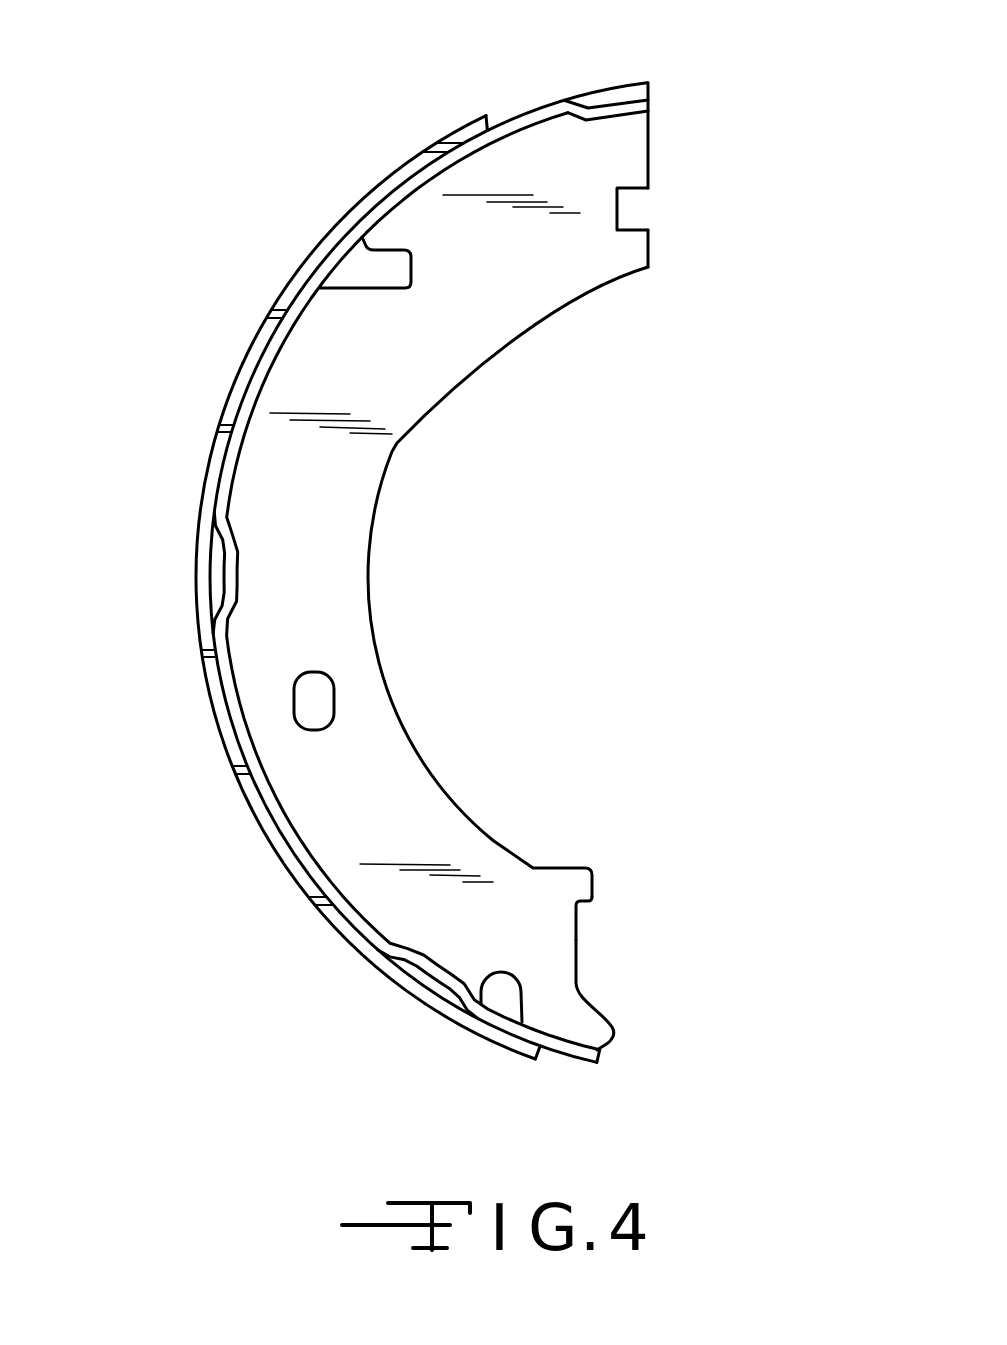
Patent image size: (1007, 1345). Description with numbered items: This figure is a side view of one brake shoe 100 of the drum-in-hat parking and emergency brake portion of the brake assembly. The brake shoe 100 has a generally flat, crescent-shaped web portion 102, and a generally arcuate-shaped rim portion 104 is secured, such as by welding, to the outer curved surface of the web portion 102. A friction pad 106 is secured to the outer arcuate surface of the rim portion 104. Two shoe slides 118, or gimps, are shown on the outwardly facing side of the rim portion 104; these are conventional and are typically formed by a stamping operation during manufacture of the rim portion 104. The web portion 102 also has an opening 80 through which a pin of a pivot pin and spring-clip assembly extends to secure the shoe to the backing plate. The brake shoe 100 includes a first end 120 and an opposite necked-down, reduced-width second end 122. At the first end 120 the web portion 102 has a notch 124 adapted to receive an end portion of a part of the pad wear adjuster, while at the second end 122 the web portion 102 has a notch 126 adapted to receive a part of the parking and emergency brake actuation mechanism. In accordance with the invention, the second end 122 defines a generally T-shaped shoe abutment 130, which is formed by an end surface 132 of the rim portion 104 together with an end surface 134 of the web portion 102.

The brake shoe 100 is at (170, 466).
The web portion 102 is at (348, 577).
The rim portion 104 is at (355, 912).
The friction pad 106 is at (385, 980).
The shoe slide 118 is at (232, 573).
The opening 80 is at (325, 692).
The first end 120 is at (645, 970).
The second end 122 is at (728, 237).
The notch 124 is at (578, 940).
The notch 126 is at (627, 210).
The T-shaped shoe abutment 130 is at (687, 126).
The end surface of the rim portion 132 is at (652, 95).
The end surface of the web portion 134 is at (650, 167).